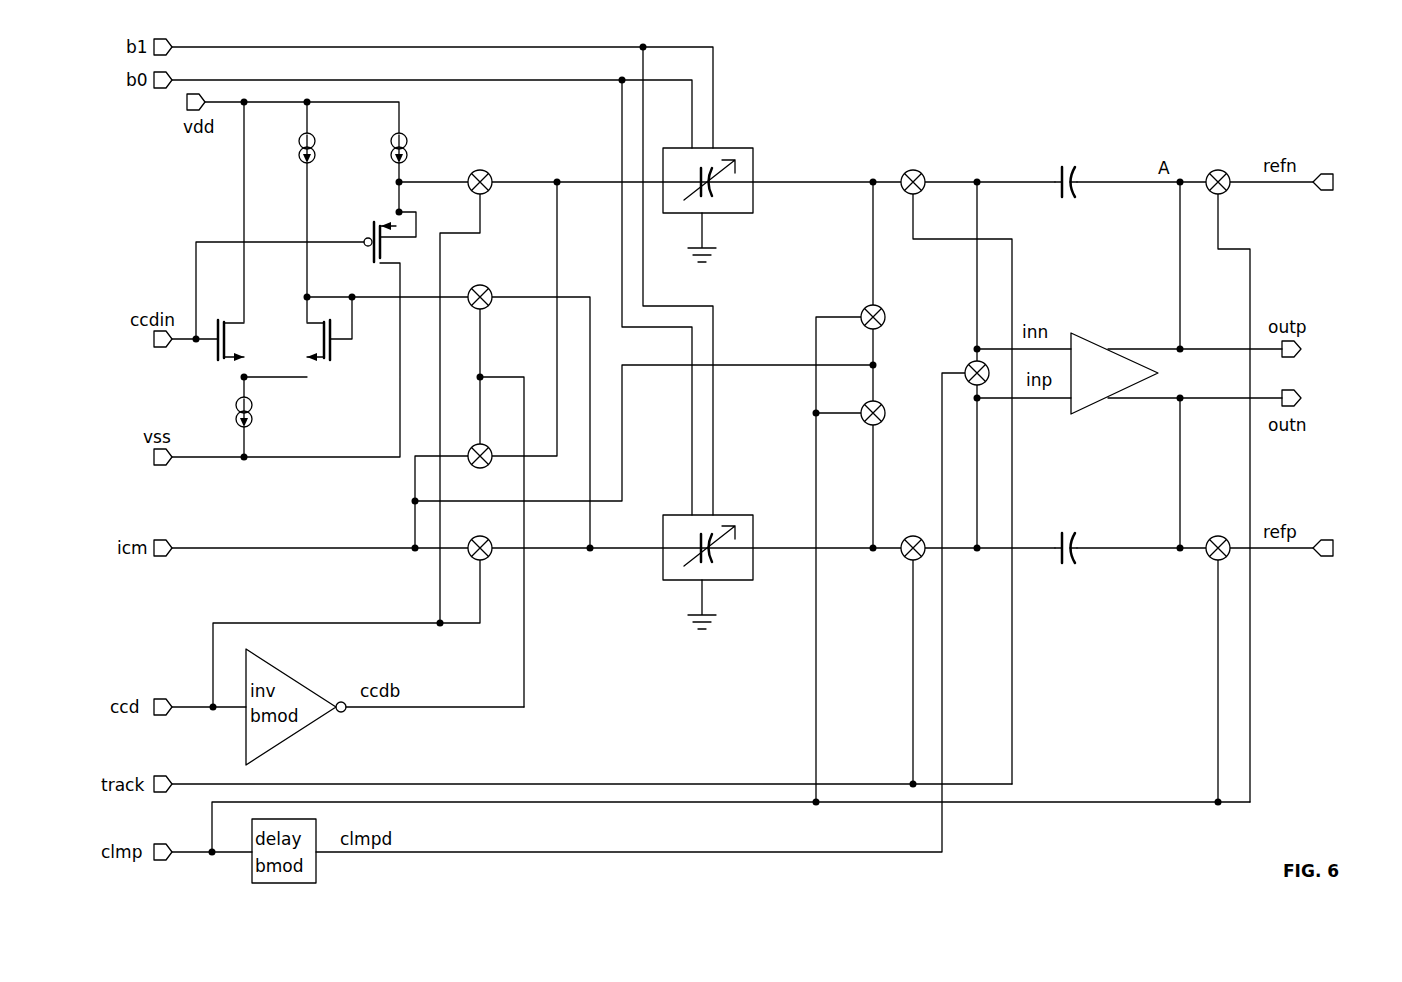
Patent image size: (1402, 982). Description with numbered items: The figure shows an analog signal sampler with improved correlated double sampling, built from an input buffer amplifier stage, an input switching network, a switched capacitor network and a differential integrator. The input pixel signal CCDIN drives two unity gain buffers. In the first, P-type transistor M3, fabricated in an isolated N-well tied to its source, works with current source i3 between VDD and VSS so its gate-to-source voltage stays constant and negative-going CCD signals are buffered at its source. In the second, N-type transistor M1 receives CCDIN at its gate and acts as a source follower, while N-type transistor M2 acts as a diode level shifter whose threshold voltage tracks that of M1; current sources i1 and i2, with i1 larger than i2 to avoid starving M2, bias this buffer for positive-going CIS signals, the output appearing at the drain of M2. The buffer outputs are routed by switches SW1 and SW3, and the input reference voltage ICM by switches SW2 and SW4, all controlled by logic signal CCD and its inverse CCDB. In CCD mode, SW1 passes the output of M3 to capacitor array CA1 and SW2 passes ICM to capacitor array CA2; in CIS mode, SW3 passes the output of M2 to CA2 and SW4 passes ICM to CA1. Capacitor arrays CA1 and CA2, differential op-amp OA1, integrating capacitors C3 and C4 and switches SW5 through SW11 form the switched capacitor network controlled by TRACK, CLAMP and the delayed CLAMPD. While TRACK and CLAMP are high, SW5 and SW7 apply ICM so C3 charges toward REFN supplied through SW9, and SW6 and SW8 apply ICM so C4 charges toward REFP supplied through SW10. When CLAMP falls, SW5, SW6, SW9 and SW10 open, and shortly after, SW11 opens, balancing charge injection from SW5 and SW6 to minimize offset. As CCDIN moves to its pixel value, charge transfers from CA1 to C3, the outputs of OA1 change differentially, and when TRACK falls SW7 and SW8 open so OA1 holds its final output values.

The switch SW1 is at (477, 171).
The switch SW2 is at (477, 536).
The switch SW3 is at (477, 285).
The switch SW4 is at (477, 468).
The switch SW5 is at (853, 308).
The switch SW6 is at (853, 403).
The switch SW7 is at (912, 170).
The switch SW8 is at (891, 561).
The switch SW9 is at (1217, 170).
The switch SW10 is at (1214, 536).
The switch SW11 is at (950, 363).
The capacitor array CA1 is at (731, 201).
The capacitor array CA2 is at (728, 560).
The integrating capacitor C3 is at (1055, 176).
The integrating capacitor C4 is at (1064, 537).
The differential operational amplifier OA1 is at (1114, 365).
The N-type MOSFET M1 is at (236, 340).
The N-type MOSFET M2 is at (319, 329).
The P-type MOSFET M3 is at (397, 226).
The current source i1 is at (253, 407).
The current source i2 is at (316, 140).
The current source i3 is at (407, 137).